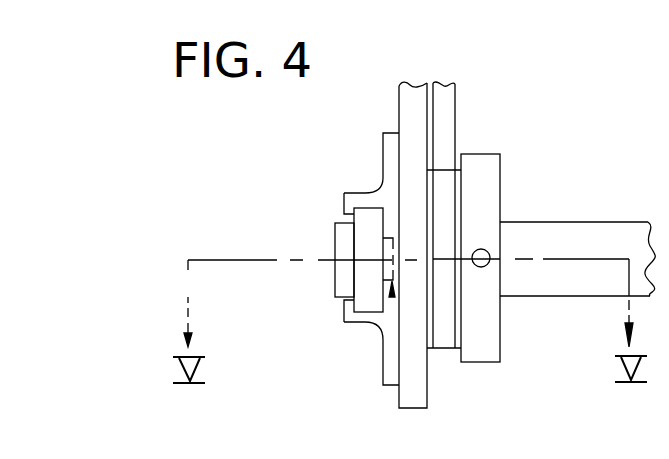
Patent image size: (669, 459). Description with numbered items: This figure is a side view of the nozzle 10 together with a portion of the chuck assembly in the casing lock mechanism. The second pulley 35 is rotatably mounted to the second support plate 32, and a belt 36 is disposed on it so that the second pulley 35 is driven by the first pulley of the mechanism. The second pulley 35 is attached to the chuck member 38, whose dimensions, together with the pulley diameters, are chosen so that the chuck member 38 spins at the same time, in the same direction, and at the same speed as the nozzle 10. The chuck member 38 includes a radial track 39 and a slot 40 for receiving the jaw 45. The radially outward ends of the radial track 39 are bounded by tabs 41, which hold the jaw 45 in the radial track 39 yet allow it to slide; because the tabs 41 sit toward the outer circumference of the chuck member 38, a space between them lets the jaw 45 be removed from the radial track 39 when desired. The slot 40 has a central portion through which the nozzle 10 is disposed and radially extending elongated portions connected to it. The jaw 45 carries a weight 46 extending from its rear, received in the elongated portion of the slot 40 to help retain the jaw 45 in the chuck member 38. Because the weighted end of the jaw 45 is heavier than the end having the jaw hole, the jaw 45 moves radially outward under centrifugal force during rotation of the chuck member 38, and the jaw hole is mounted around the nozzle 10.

The nozzle 10 is at (587, 240).
The second support plate 32 is at (410, 112).
The second pulley 35 is at (482, 322).
The belt 36 is at (445, 122).
The chuck member 38 is at (367, 195).
The radial track 39 is at (363, 192).
The slot 40 is at (392, 297).
The tabs 41 is at (343, 207).
The jaw 45 is at (345, 302).
The weight 46 is at (388, 248).